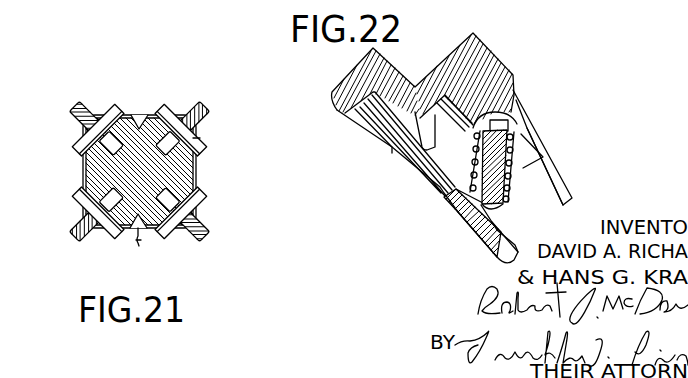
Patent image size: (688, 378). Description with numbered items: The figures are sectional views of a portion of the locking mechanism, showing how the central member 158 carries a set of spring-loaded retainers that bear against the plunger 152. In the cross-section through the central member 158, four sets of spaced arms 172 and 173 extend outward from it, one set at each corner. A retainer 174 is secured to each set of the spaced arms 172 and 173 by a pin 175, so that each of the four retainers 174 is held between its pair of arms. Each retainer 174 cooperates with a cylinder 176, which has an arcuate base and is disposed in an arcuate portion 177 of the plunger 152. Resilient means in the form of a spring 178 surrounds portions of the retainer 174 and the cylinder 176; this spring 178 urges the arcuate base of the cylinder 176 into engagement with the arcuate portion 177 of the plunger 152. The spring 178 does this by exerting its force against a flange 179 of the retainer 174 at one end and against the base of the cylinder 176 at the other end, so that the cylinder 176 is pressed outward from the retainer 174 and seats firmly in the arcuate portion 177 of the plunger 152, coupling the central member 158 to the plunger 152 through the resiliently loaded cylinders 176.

In FIG. 22, the plunger 152 is at (515, 74).
In FIG. 21, the central member 158 is at (143, 225).
In FIG. 22, the central member 158 is at (460, 228).
In FIG. 21, the spaced arm 172 is at (178, 170).
In FIG. 21, the spaced arm 173 is at (143, 128).
In FIG. 21, the retainer 174 is at (193, 123).
In FIG. 22, the retainer 174 is at (513, 207).
In FIG. 21, the pin 175 is at (200, 138).
In FIG. 22, the pin 175 is at (507, 258).
In FIG. 22, the cylinder 176 is at (513, 110).
In FIG. 22, the arcuate portion 177 is at (523, 147).
In FIG. 22, the spring 178 is at (540, 181).
In FIG. 22, the flange 179 is at (463, 203).